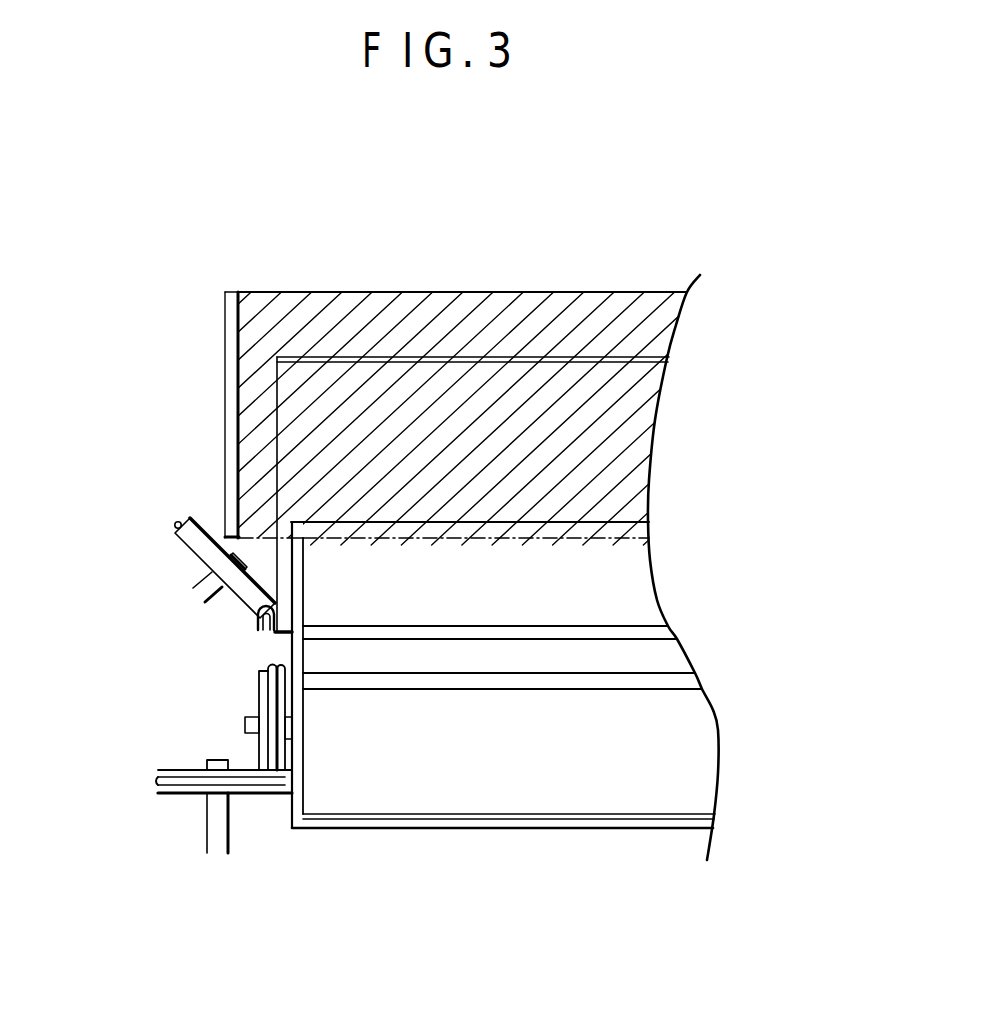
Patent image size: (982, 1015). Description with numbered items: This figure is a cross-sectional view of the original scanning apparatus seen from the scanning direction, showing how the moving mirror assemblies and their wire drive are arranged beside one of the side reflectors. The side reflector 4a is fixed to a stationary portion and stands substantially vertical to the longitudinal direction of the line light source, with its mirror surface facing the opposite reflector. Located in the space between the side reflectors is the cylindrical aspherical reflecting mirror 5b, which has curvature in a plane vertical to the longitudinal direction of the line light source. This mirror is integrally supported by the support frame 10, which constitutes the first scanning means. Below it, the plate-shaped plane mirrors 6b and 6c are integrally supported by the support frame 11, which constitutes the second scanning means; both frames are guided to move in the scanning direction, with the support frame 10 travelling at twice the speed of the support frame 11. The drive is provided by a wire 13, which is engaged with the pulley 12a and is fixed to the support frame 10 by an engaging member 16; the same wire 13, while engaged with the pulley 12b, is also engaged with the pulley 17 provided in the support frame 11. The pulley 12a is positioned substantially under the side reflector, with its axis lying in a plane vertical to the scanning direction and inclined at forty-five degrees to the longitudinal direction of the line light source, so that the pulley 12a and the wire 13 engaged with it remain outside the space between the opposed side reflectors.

The side reflector 4a is at (236, 330).
The cylindrical aspherical reflecting mirror 5b is at (645, 430).
The plane mirror 6b is at (642, 588).
The plane mirror 6c is at (703, 740).
The support frame 10 is at (280, 553).
The support frame 11 is at (522, 820).
The pulley 12a is at (198, 555).
The pulley 12b is at (172, 798).
The wire 13 is at (176, 528).
The engaging member 16 is at (258, 622).
The pulley 17 is at (258, 705).